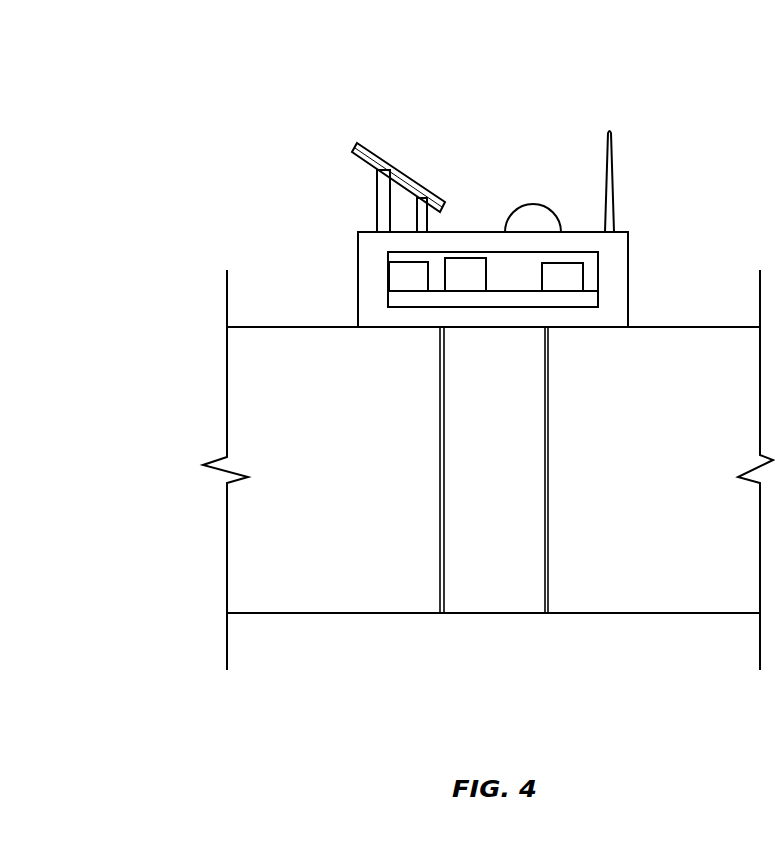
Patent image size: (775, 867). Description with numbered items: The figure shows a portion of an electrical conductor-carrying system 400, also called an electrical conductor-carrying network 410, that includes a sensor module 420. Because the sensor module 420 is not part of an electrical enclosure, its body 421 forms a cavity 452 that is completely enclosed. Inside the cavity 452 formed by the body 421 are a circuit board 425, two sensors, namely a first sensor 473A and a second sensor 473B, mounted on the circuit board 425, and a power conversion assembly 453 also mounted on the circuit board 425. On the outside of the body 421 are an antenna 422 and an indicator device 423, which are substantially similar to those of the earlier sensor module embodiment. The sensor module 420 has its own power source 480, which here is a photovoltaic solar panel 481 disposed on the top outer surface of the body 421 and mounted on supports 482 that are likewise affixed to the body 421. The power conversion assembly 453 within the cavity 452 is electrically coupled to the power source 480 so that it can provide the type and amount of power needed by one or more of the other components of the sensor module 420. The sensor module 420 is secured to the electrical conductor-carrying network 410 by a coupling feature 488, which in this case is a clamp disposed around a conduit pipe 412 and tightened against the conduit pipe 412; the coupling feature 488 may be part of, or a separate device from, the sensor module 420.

The electrical conductor-carrying system 400 is at (197, 57).
The electrical conductor-carrying network 410 is at (386, 650).
The conduit pipe 412 is at (328, 595).
The coupling feature 488 is at (497, 595).
The sensor module 420 is at (543, 160).
The body 421 is at (612, 258).
The antenna 422 is at (613, 157).
The indicator device 423 is at (540, 206).
The circuit board 425 is at (590, 302).
The cavity 452 is at (510, 278).
The power conversion assembly 453 is at (400, 278).
The sensor 473A is at (475, 282).
The sensor 473B is at (563, 282).
The power source 480 is at (427, 142).
The photovoltaic solar panel 481 is at (370, 148).
The supports 482 is at (418, 223).